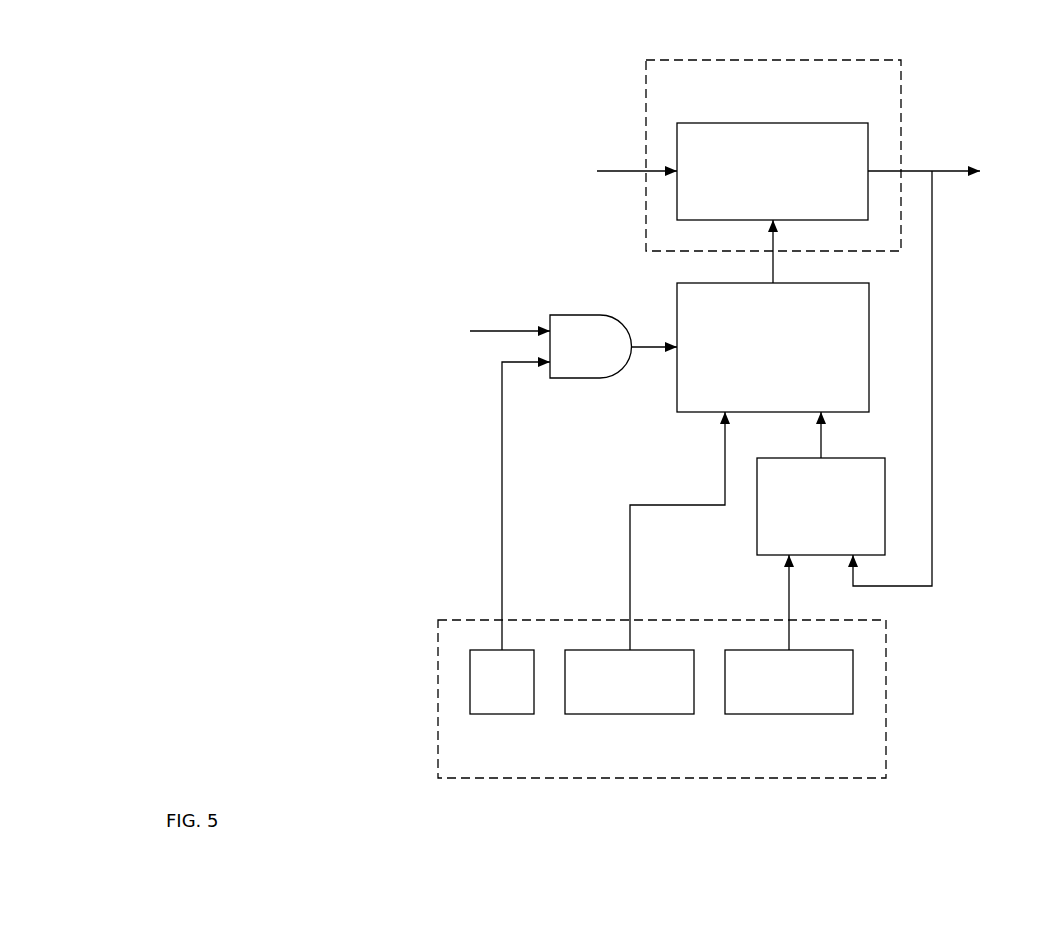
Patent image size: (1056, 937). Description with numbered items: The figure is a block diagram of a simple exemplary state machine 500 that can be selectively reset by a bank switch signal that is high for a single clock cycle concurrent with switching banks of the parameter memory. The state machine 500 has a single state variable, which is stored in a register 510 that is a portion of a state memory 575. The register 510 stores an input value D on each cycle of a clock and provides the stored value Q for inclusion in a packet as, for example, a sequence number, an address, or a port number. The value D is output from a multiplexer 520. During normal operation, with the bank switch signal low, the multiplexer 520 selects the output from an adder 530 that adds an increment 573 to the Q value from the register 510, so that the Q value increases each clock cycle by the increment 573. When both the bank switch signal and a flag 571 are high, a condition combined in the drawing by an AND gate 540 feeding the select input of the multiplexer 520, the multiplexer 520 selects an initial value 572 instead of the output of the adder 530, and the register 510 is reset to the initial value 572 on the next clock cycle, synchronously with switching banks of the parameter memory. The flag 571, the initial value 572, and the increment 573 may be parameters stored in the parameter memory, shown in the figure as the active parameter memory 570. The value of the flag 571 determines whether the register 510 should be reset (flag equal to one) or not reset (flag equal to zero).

The state machine 500 is at (516, 55).
The state memory 575 is at (773, 155).
The register 510 is at (772, 171).
The AND gate 540 is at (591, 346).
The multiplexer 520 is at (773, 347).
The adder 530 is at (821, 506).
The active parameter memory 570 is at (662, 699).
The flag 571 is at (502, 682).
The initial value 572 is at (629, 682).
The increment 573 is at (789, 682).